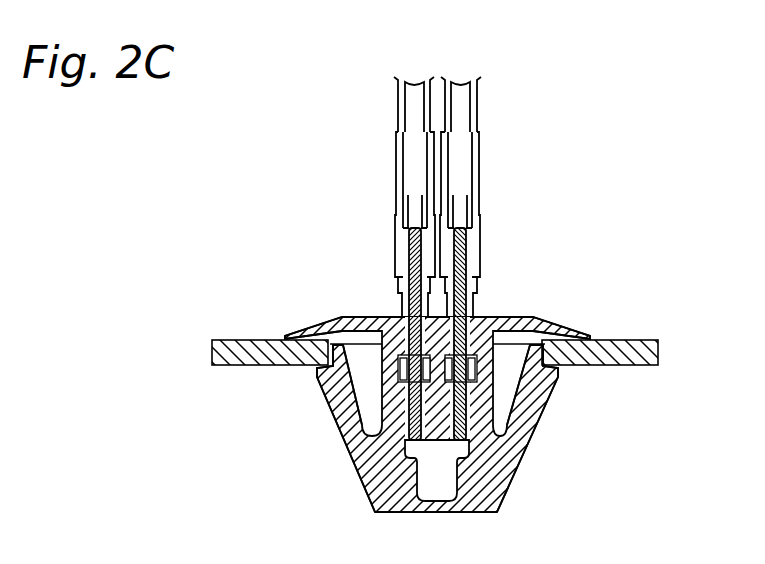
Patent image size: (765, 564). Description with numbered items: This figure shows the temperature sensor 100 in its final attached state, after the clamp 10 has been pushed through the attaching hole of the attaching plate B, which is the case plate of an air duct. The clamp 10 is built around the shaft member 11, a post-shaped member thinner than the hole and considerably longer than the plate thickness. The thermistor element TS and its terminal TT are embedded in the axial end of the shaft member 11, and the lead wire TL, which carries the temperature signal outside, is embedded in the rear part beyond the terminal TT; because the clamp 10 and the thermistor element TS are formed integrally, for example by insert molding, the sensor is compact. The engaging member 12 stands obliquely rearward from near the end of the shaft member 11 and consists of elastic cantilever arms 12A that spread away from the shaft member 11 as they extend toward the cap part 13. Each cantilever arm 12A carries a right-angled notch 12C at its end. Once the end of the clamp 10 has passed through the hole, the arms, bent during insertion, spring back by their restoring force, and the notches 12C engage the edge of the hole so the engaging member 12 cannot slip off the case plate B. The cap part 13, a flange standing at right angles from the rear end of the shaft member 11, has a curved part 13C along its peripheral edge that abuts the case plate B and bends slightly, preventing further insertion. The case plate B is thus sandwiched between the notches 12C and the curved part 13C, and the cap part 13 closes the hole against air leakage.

The temperature sensor 100 is at (548, 143).
The clamp 10 is at (510, 298).
The shaft member 11 is at (374, 398).
The engaging member 12 is at (345, 420).
The cantilever arm 12A is at (392, 396).
The notch 12C is at (338, 388).
The cap part 13 is at (336, 316).
The curved part 13C is at (284, 336).
The attaching plate B is at (660, 351).
The lead wire TL is at (470, 94).
The terminal TT is at (478, 291).
The thermistor element TS is at (432, 480).